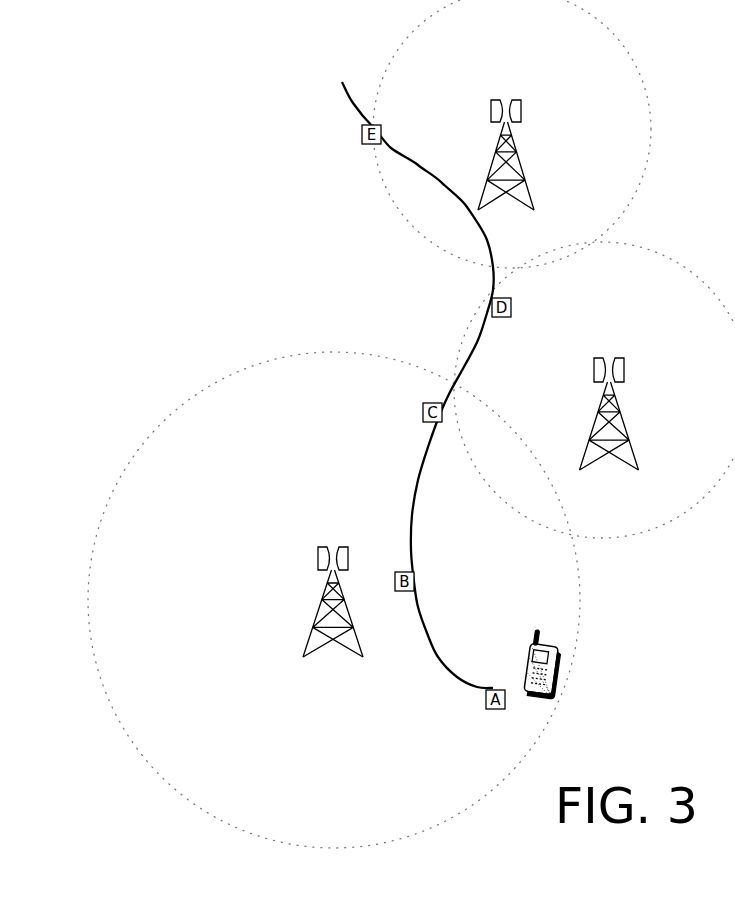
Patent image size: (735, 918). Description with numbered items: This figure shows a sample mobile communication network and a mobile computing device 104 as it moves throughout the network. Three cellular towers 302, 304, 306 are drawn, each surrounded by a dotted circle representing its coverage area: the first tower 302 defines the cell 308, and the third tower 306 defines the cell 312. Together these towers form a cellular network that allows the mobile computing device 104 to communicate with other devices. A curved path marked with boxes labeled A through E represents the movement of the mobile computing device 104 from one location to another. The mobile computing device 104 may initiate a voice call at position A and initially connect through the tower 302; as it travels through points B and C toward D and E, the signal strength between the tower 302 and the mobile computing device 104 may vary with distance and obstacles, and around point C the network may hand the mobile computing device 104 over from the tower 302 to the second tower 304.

The mobile computing device 104 is at (560, 673).
The cellular tower 302 is at (357, 682).
The cellular tower 304 is at (652, 411).
The cellular tower 306 is at (579, 156).
The cell 308 is at (250, 372).
The cell 312 is at (652, 130).